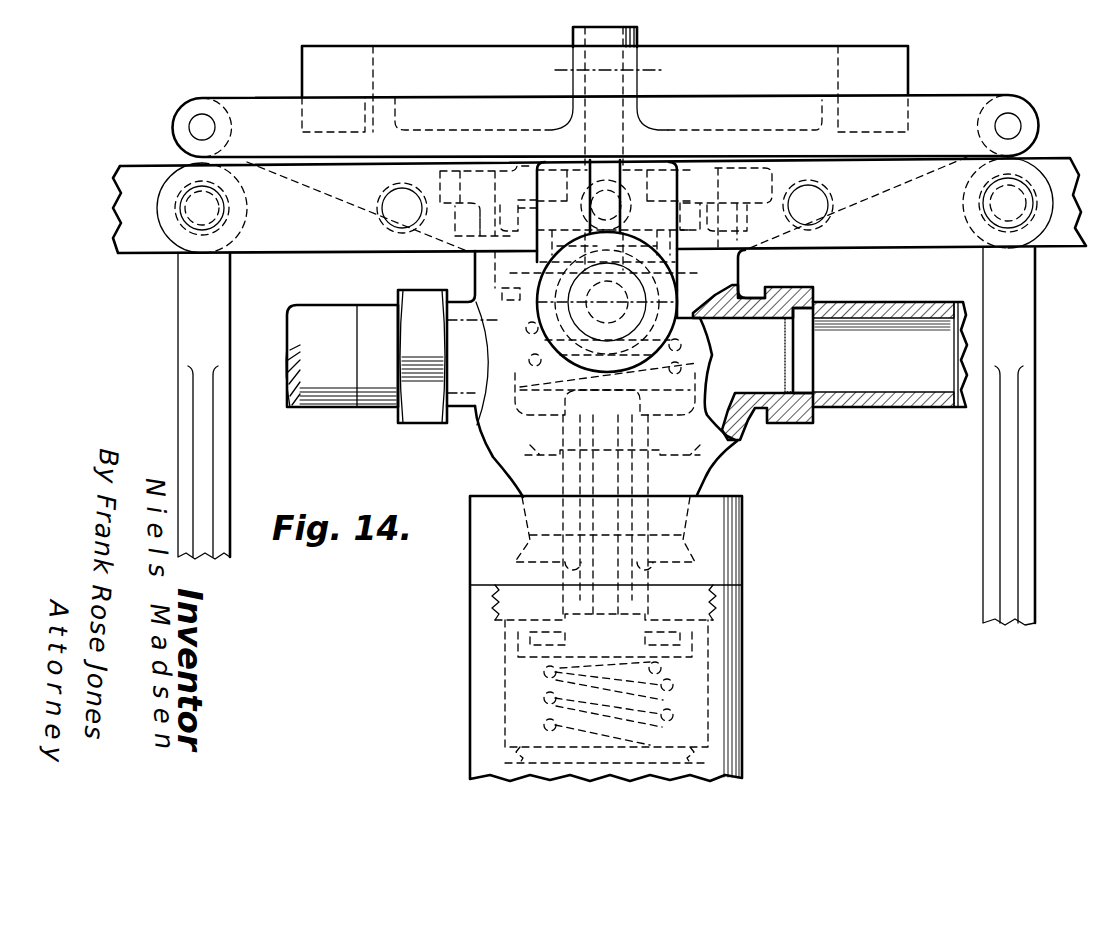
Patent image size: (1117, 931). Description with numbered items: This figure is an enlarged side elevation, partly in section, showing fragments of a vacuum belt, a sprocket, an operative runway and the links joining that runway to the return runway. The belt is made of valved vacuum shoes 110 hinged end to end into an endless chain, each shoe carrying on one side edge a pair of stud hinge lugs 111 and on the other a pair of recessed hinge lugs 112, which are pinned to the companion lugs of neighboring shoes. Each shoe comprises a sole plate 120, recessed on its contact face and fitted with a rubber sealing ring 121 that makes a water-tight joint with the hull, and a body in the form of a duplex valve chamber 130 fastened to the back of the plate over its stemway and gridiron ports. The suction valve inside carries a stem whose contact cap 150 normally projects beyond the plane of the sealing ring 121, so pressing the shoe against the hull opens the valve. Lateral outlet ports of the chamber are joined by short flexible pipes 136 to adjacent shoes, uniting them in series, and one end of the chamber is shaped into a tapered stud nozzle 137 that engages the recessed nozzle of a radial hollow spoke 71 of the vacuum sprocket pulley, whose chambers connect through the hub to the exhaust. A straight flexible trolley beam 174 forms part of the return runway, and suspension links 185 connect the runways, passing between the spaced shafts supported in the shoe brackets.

The radial hollow spoke 71 is at (720, 638).
The valved vacuum shoe 110 is at (632, 112).
The stud hinge lug 111 is at (202, 122).
The recessed hinge lug 112 is at (1020, 126).
The sole plate 120 is at (582, 89).
The sealing ring 121 is at (877, 65).
The duplex valve chamber 130 is at (478, 271).
The short flexible pipe 136 is at (320, 410).
The tapered stud nozzle 137 is at (683, 475).
The contact cap 150 is at (637, 36).
The straight flexible trolley beam 174 is at (133, 172).
The suspension link 185 is at (191, 333).